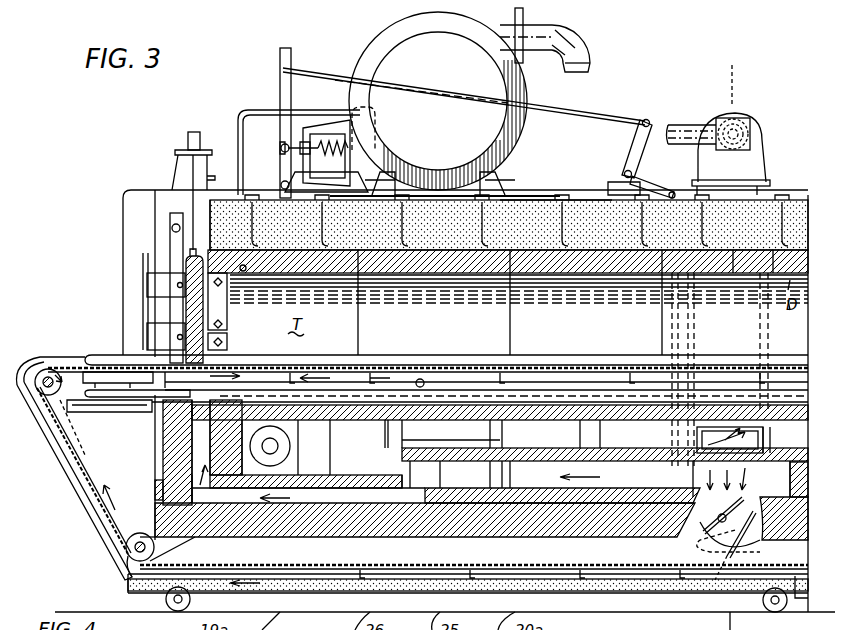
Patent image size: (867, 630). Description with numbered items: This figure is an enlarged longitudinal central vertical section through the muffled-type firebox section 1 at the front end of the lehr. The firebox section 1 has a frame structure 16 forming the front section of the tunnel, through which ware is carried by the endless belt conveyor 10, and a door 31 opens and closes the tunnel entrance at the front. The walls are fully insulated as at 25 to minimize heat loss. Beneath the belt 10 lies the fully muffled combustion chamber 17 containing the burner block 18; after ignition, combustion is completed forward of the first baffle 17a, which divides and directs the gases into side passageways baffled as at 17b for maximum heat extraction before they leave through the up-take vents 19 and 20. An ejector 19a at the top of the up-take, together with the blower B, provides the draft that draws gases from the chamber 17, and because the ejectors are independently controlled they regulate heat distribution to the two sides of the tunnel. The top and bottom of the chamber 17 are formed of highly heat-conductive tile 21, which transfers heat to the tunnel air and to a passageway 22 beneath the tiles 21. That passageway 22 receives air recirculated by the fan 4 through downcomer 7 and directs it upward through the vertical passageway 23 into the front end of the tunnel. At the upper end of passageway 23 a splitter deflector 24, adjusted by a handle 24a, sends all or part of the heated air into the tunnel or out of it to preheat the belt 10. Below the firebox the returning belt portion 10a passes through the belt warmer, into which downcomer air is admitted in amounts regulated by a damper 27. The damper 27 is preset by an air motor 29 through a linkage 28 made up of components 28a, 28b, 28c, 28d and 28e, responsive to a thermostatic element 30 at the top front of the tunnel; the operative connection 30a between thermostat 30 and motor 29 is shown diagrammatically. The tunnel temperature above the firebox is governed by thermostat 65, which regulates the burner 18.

The firebox section 1 is at (118, 188).
The recirculating fan 4 is at (736, 77).
The downcomer 7 is at (692, 316).
The endless belt conveyor 10 is at (527, 368).
The belt portion 10a is at (70, 358).
The frame structure 16 is at (583, 194).
The combustion chamber 17 is at (230, 448).
The first baffle 17a is at (318, 458).
The baffle 17b is at (515, 439).
The burner block 18 is at (245, 505).
The up-take vent 19 is at (690, 443).
The ejector 19a is at (752, 152).
The up-take vent 20 is at (445, 593).
The heat-conductive tile 21 is at (290, 441).
The passageway 22 is at (610, 520).
The vertical passageway 23 is at (200, 424).
The splitter deflector 24 is at (148, 393).
The handle 24a is at (105, 393).
The insulation 25 is at (518, 200).
The damper 27 is at (748, 538).
The linkage 28 is at (578, 107).
The linkage component 28a is at (280, 62).
The linkage component 28b is at (613, 120).
The linkage component 28c is at (637, 152).
The linkage component 28d is at (665, 335).
The linkage component 28e is at (720, 522).
The air motor 29 is at (318, 128).
The thermostatic element 30 is at (243, 272).
The operative connection 30a is at (240, 118).
The door 31 is at (188, 265).
The thermostat 65 is at (422, 382).
The blower B is at (395, 60).